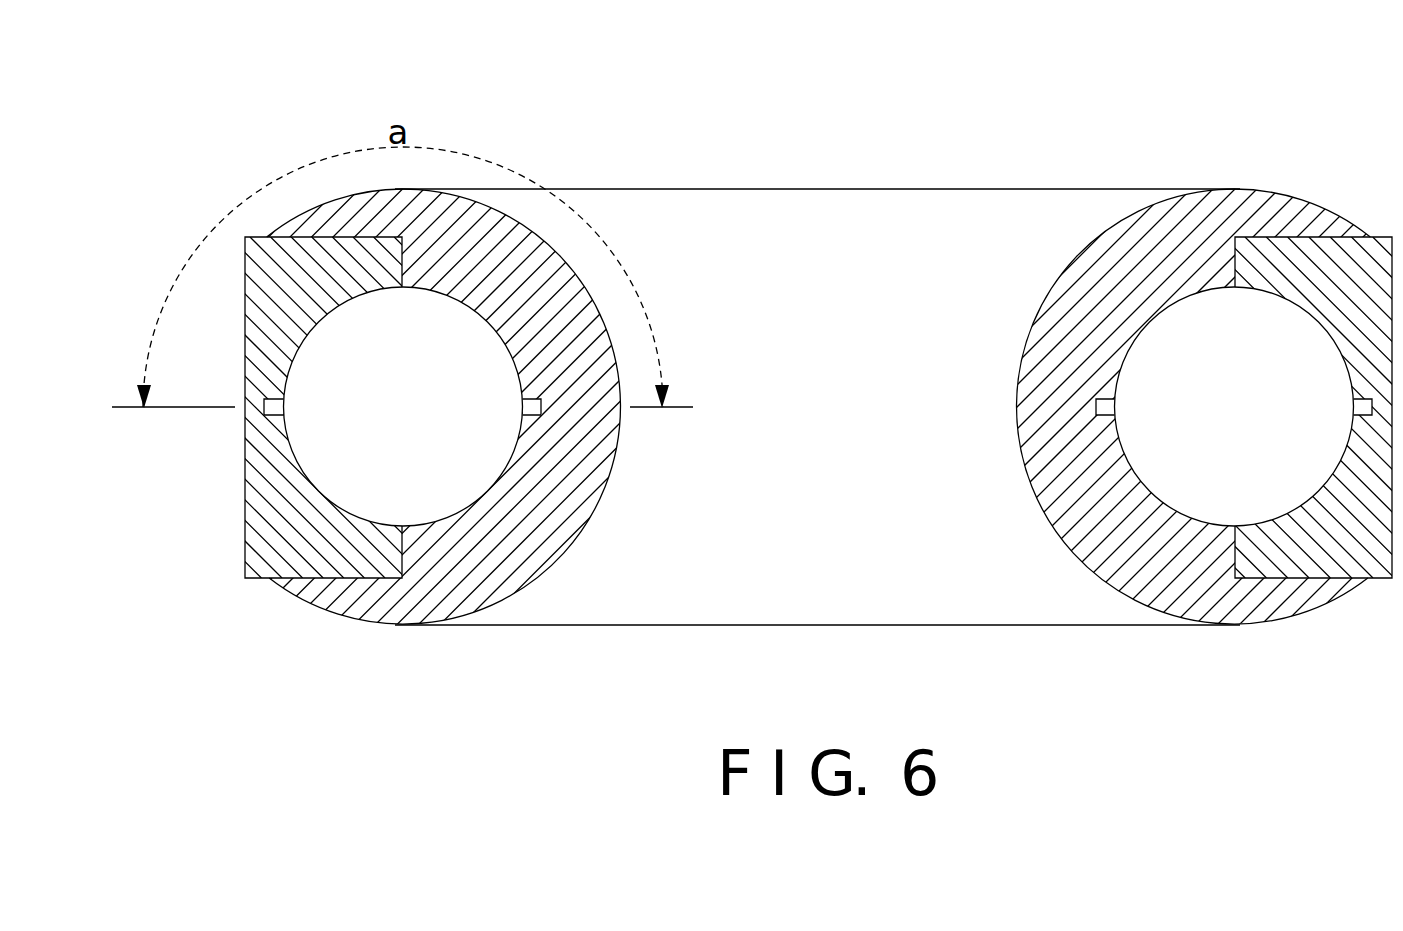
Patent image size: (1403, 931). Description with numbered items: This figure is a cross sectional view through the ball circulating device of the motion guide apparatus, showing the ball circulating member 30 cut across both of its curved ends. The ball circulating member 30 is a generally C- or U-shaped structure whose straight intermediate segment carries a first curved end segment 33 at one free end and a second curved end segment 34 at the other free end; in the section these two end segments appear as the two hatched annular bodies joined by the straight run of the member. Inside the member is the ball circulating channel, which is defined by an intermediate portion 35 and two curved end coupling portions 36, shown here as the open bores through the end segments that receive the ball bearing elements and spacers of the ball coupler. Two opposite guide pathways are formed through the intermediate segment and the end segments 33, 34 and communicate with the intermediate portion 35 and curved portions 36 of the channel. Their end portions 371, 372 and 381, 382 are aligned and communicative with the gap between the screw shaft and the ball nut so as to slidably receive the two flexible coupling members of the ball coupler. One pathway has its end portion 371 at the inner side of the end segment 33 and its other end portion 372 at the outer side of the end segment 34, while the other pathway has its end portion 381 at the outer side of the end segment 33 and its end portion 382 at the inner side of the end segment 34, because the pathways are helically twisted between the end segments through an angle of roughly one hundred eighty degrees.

The ball circulating member 30 is at (867, 223).
The first curved end segment 33 is at (1050, 338).
The second curved end segment 34 is at (580, 462).
The intermediate portion 35 is at (1245, 393).
The curved end coupling portion 36 is at (412, 453).
The end portion of guide pathway 371 is at (1360, 400).
The end portion of guide pathway 372 is at (271, 406).
The end portion of guide pathway 381 is at (1105, 396).
The end portion of guide pathway 382 is at (532, 410).